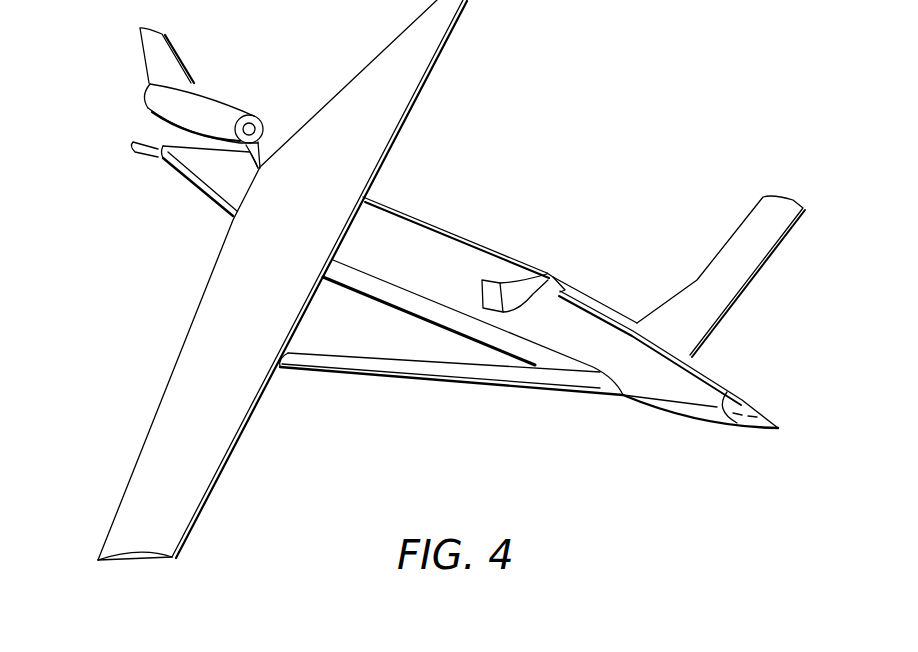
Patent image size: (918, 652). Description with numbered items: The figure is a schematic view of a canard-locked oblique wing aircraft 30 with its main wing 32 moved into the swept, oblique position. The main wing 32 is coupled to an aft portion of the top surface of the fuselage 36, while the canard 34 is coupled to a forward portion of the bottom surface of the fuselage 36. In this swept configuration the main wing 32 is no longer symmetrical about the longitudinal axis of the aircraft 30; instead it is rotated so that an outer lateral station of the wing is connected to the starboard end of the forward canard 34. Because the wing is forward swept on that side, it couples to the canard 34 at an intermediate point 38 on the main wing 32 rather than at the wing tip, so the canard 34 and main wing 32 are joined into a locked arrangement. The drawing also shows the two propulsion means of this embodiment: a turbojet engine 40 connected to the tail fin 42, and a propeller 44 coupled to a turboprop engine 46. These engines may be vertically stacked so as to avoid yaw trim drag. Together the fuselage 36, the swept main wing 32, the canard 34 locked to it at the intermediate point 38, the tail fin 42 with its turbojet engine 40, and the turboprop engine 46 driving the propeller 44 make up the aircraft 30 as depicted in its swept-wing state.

The canard-locked oblique wing aircraft 30 is at (604, 182).
The main wing 32 is at (172, 507).
The canard 34 is at (490, 379).
The fuselage 36 is at (483, 260).
The intermediate point 38 is at (285, 370).
The turbojet engine 40 is at (212, 100).
The tail fin 42 is at (158, 67).
The propeller 44 is at (130, 144).
The turboprop engine 46 is at (162, 167).